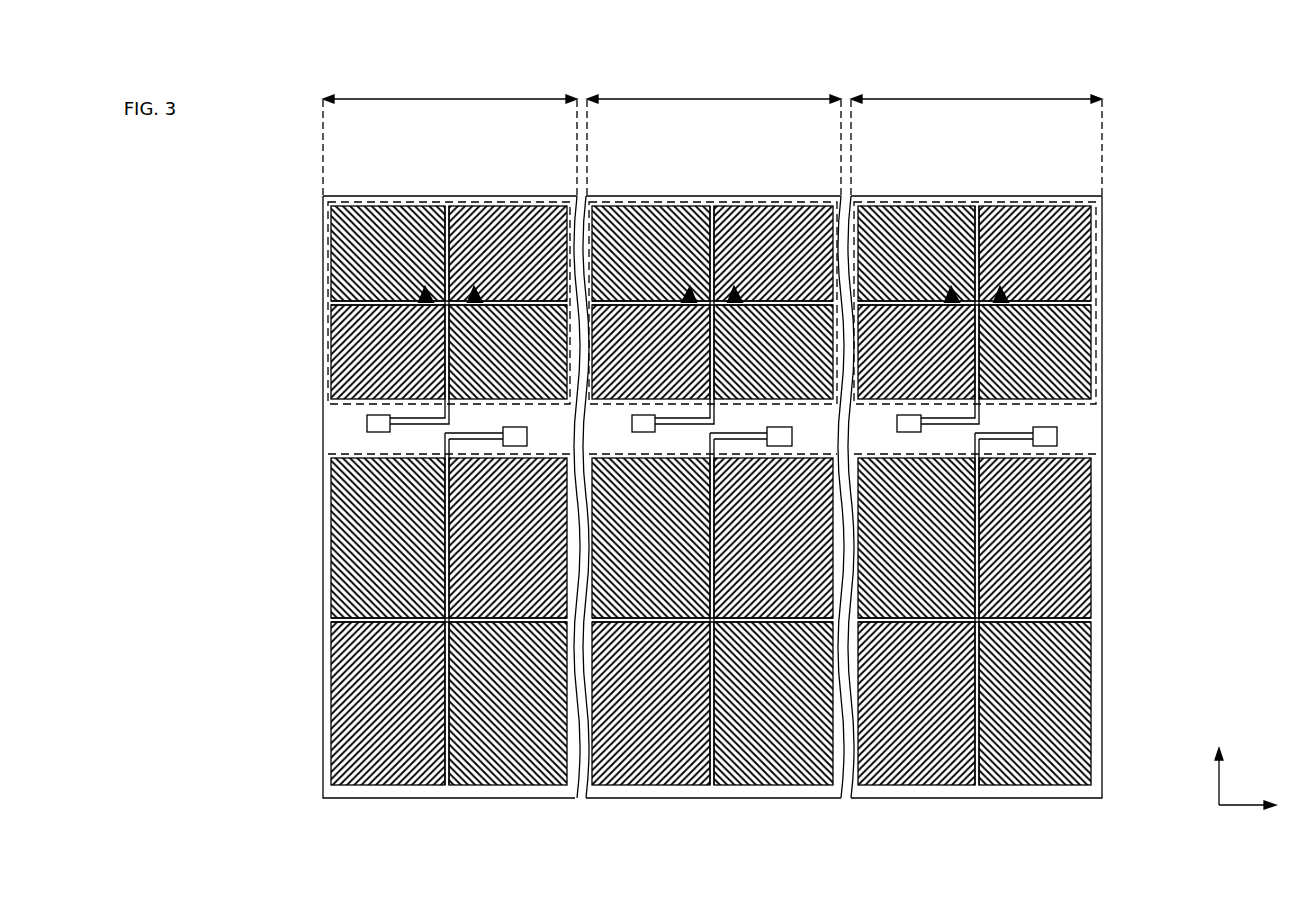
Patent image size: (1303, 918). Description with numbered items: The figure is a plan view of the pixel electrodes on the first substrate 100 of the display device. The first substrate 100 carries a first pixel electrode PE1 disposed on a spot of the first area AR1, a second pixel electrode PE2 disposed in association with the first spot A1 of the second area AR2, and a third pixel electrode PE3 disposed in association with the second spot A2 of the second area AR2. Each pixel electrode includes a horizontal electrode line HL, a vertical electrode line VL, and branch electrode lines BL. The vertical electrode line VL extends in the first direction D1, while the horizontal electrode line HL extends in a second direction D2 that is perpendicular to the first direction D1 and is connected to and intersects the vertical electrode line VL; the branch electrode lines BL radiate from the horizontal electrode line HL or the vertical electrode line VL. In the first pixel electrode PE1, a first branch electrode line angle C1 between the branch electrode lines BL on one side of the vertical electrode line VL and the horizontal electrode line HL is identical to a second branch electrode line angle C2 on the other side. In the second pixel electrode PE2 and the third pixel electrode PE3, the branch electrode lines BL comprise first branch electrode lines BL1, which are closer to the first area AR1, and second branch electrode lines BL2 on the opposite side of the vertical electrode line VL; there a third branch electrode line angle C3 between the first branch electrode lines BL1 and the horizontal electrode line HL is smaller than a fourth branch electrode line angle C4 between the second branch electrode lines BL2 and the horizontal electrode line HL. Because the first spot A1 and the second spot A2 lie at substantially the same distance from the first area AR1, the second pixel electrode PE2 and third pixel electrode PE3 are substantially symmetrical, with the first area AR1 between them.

The first substrate 100 is at (1095, 549).
The first area AR1 is at (714, 134).
The second area AR2 is at (712, 134).
The first pixel electrode PE1 is at (823, 140).
The second pixel electrode PE2 is at (1195, 215).
The third pixel electrode PE3 is at (215, 215).
The horizontal electrode line HL is at (330, 294).
The vertical electrode line VL is at (435, 330).
The branch electrode lines BL is at (255, 362).
The first branch electrode lines BL1 is at (466, 398).
The second branch electrode lines BL2 is at (322, 377).
The first branch electrode line angle C1 is at (686, 291).
The second branch electrode line angle C2 is at (723, 291).
The third branch electrode line angle C3 is at (465, 291).
The fourth branch electrode line angle C4 is at (430, 293).
The first spot A1 is at (1063, 800).
The second spot A2 is at (345, 800).
The first direction D1 is at (1219, 765).
The second direction D2 is at (1257, 804).